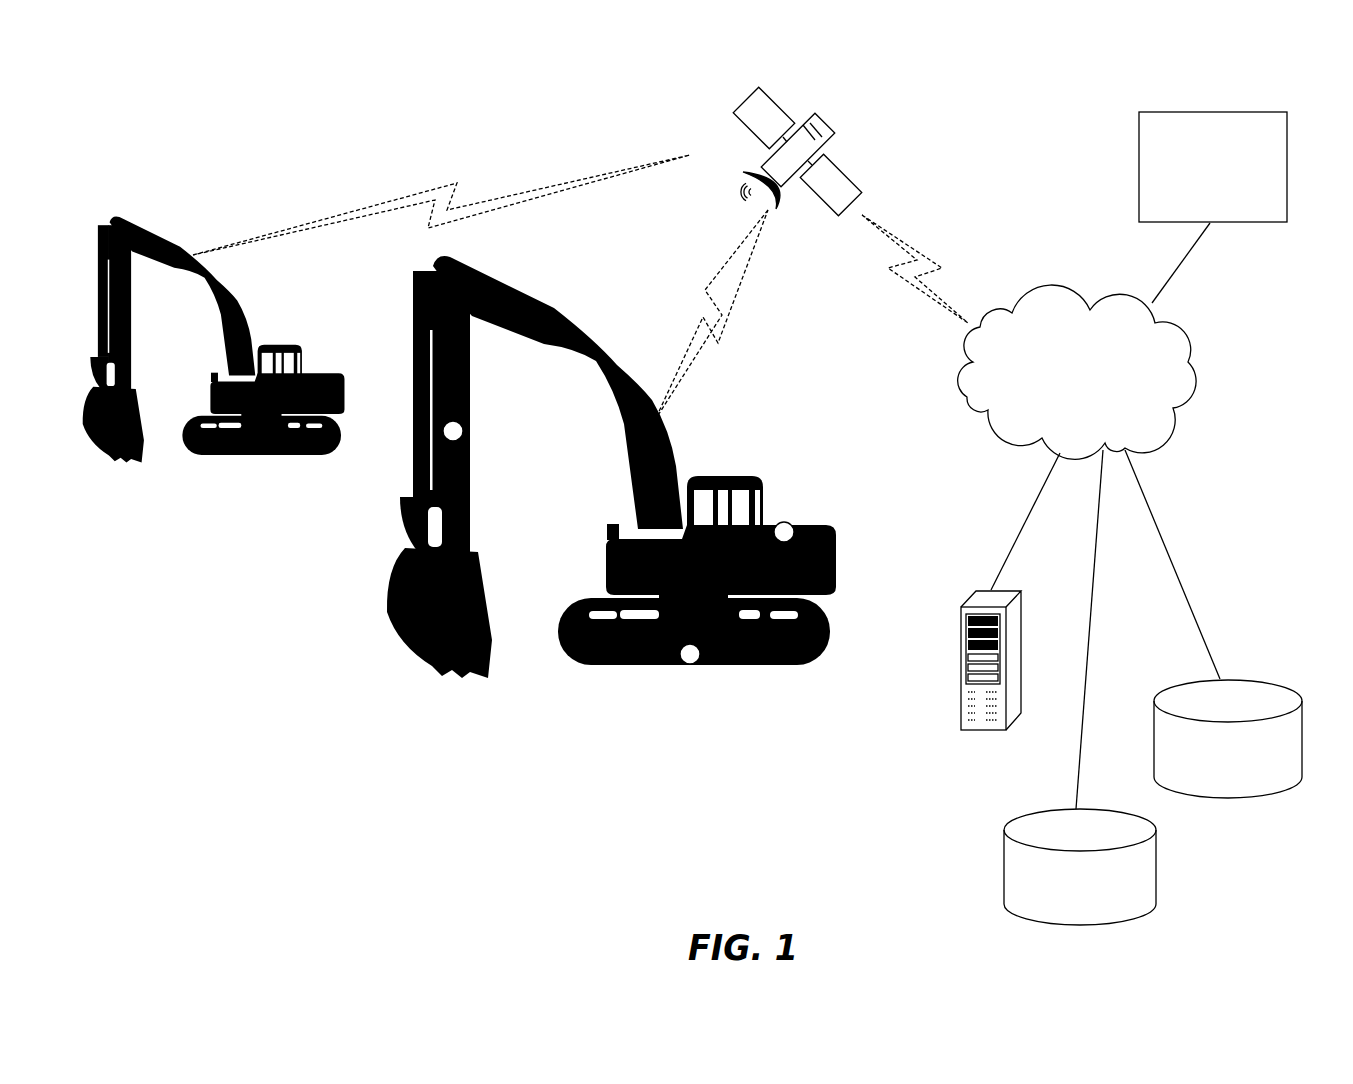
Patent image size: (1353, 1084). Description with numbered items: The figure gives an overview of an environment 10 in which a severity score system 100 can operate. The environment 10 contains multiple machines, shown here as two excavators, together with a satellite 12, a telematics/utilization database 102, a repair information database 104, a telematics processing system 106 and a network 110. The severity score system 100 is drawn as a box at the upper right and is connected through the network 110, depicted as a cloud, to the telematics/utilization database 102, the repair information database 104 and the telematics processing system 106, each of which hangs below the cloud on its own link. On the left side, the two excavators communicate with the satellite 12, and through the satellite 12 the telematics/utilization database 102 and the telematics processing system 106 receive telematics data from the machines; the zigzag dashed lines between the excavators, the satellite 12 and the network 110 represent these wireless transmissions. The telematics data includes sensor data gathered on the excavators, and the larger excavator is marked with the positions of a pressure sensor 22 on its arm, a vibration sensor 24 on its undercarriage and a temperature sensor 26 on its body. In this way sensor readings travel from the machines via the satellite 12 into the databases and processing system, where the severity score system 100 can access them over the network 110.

The environment 10 is at (400, 107).
The satellite 12 is at (820, 127).
The pressure sensor 22 is at (467, 433).
The vibration sensor 24 is at (697, 665).
The temperature sensor 26 is at (788, 524).
The severity score system 100 is at (1148, 110).
The telematics/utilization database 102 is at (1004, 860).
The repair information database 104 is at (1228, 795).
The telematics processing system 106 is at (964, 734).
The network 110 is at (1175, 410).